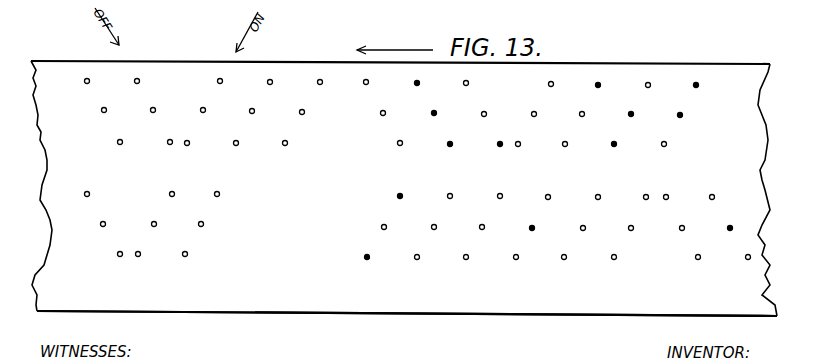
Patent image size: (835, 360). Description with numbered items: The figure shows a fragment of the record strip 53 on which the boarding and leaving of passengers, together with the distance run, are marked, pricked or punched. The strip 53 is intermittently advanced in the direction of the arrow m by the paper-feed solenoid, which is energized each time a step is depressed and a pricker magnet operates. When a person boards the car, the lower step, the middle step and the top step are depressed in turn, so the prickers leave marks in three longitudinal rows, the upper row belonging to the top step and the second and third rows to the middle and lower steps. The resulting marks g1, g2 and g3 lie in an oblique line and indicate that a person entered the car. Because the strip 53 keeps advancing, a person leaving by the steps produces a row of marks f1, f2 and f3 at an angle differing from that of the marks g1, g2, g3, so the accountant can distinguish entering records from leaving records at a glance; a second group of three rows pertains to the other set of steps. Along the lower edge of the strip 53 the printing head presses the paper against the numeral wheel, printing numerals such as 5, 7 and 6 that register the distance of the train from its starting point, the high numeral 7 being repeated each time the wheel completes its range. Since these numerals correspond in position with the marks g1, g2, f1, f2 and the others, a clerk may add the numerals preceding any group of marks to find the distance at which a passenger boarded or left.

The entering mark g1 is at (223, 81).
The entering mark g2 is at (206, 110).
The entering mark g3 is at (189, 145).
The leaving mark f1 is at (363, 83).
The leaving mark f2 is at (380, 114).
The leaving mark f3 is at (397, 144).
The arrow indicating direction of strip advance m is at (395, 42).
The record strip 53 is at (467, 305).
The printed numeral 5 is at (78, 288).
The printed numeral 7 is at (343, 289).
The printed numeral 6 is at (369, 288).